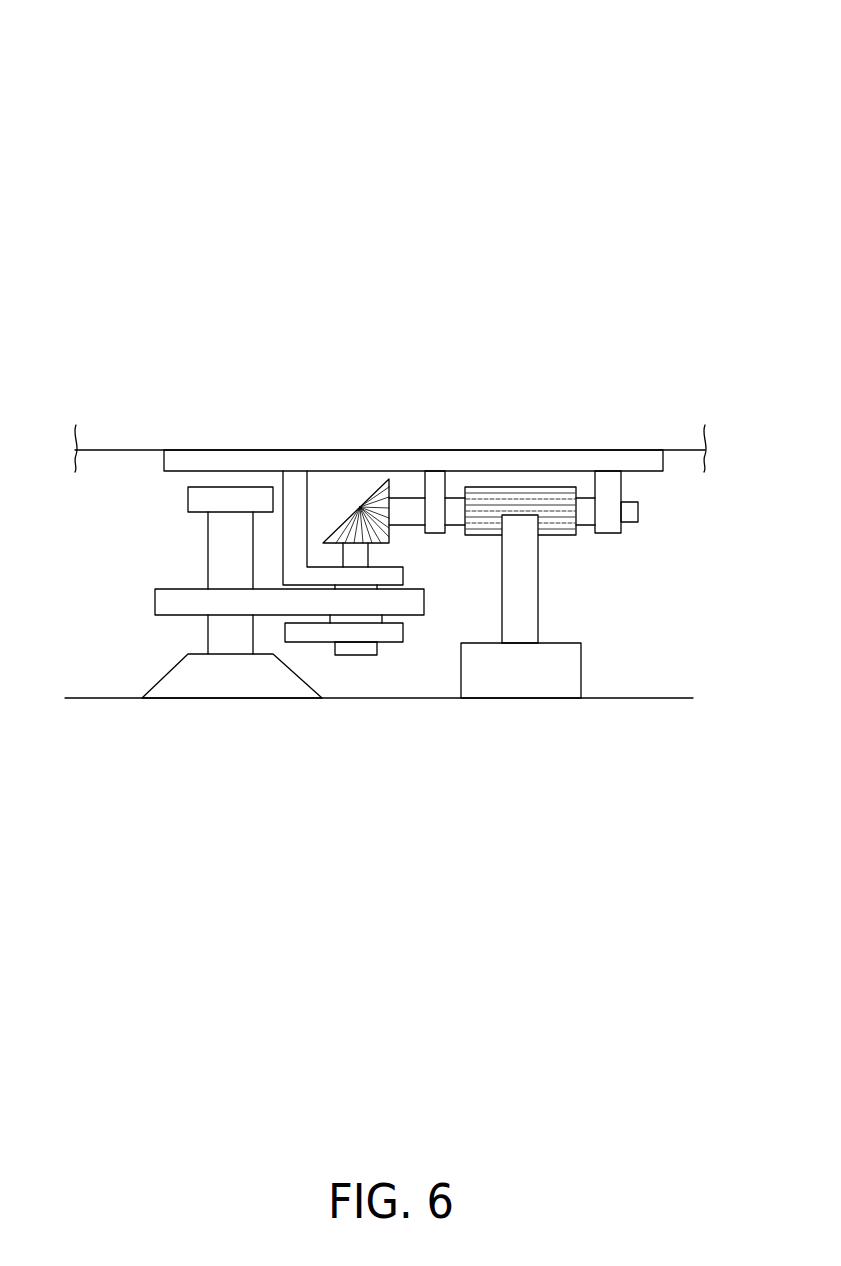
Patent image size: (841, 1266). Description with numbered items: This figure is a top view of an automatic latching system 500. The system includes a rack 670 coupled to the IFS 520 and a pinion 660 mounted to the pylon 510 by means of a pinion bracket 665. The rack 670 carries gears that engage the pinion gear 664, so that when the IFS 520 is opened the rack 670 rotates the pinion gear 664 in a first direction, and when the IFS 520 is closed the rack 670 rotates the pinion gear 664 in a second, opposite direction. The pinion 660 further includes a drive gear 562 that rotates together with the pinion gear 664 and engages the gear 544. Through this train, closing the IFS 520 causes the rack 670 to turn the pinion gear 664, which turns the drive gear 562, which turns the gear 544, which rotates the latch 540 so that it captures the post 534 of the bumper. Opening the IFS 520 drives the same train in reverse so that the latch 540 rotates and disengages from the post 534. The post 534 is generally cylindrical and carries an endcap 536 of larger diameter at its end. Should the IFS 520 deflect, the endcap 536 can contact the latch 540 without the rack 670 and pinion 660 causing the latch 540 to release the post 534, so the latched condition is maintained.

The automatic latching system 500 is at (395, 405).
The pylon 510 is at (390, 390).
The IFS 520 is at (379, 754).
The post 534 is at (194, 651).
The endcap 536 is at (230, 468).
The latch 540 is at (225, 572).
The gear 544 is at (342, 503).
The drive gear 562 is at (418, 450).
The pinion 660 is at (679, 526).
The pinion gear 664 is at (534, 440).
The pinion bracket 665 is at (689, 564).
The rack 670 is at (563, 606).